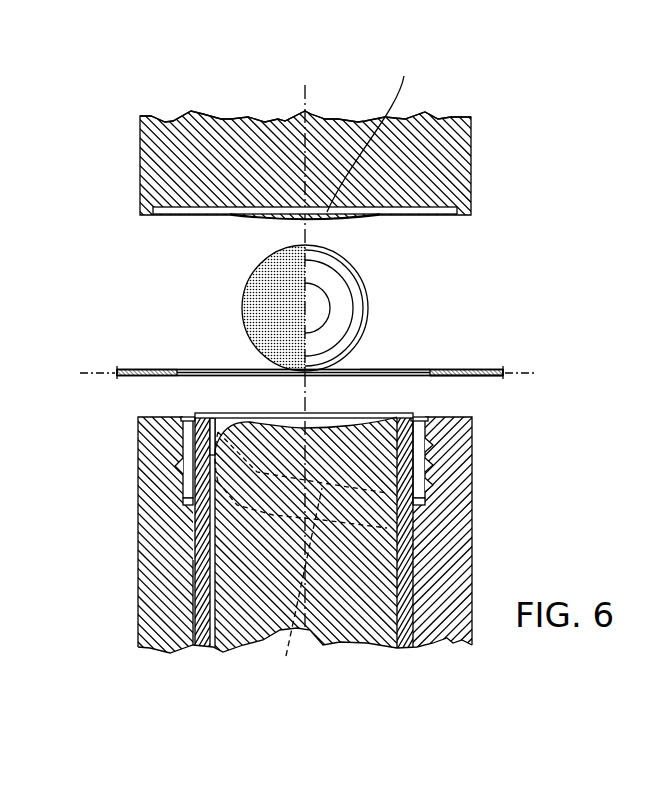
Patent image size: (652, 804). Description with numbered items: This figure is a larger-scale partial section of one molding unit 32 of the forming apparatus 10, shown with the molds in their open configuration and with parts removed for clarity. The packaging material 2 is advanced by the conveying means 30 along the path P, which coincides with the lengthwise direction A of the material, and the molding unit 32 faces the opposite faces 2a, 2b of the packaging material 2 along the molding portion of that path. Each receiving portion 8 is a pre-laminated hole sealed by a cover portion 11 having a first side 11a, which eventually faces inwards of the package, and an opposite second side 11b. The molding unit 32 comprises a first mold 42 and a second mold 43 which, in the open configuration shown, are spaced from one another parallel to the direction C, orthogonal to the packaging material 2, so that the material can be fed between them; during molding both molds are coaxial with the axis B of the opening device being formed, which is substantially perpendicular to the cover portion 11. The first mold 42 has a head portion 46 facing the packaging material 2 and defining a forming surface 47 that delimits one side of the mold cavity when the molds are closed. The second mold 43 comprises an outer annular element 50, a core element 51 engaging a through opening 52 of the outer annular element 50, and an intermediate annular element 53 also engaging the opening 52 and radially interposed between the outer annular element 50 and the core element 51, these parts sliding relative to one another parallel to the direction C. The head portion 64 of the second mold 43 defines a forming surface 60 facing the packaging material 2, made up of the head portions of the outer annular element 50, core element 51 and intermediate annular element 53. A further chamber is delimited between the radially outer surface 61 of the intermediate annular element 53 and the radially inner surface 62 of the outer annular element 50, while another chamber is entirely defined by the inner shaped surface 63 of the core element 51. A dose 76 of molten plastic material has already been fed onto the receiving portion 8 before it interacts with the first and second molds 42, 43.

The forming apparatus 10 is at (487, 87).
The conveying means 30 is at (326, 393).
The first mold 42 is at (251, 109).
The head portion 46 is at (375, 132).
The forming surface 47 is at (358, 222).
The dose of molten plastic material 76 is at (348, 287).
The molding unit 32 is at (479, 278).
The packaging material 2 is at (301, 354).
The face of packaging material 2a is at (137, 365).
The face of packaging material 2b is at (135, 379).
The cover portion 11 is at (228, 366).
The side of cover portion 11a is at (401, 365).
The side of cover portion 11b is at (406, 384).
The receiving portion 8 is at (381, 359).
The forming surface 60 is at (289, 417).
The radially outer surface 61 is at (425, 467).
The radially inner surface 62 is at (196, 478).
The head portion 64 is at (339, 470).
The inner shaped surface 63 is at (323, 486).
The outer annular element 50 is at (455, 541).
The core element 51 is at (365, 577).
The opening 52 is at (301, 533).
The intermediate annular element 53 is at (207, 620).
The second mold 43 is at (326, 393).
The lengthwise direction A is at (515, 373).
The axis B is at (312, 93).
The direction C is at (628, 343).
The path P is at (545, 369).